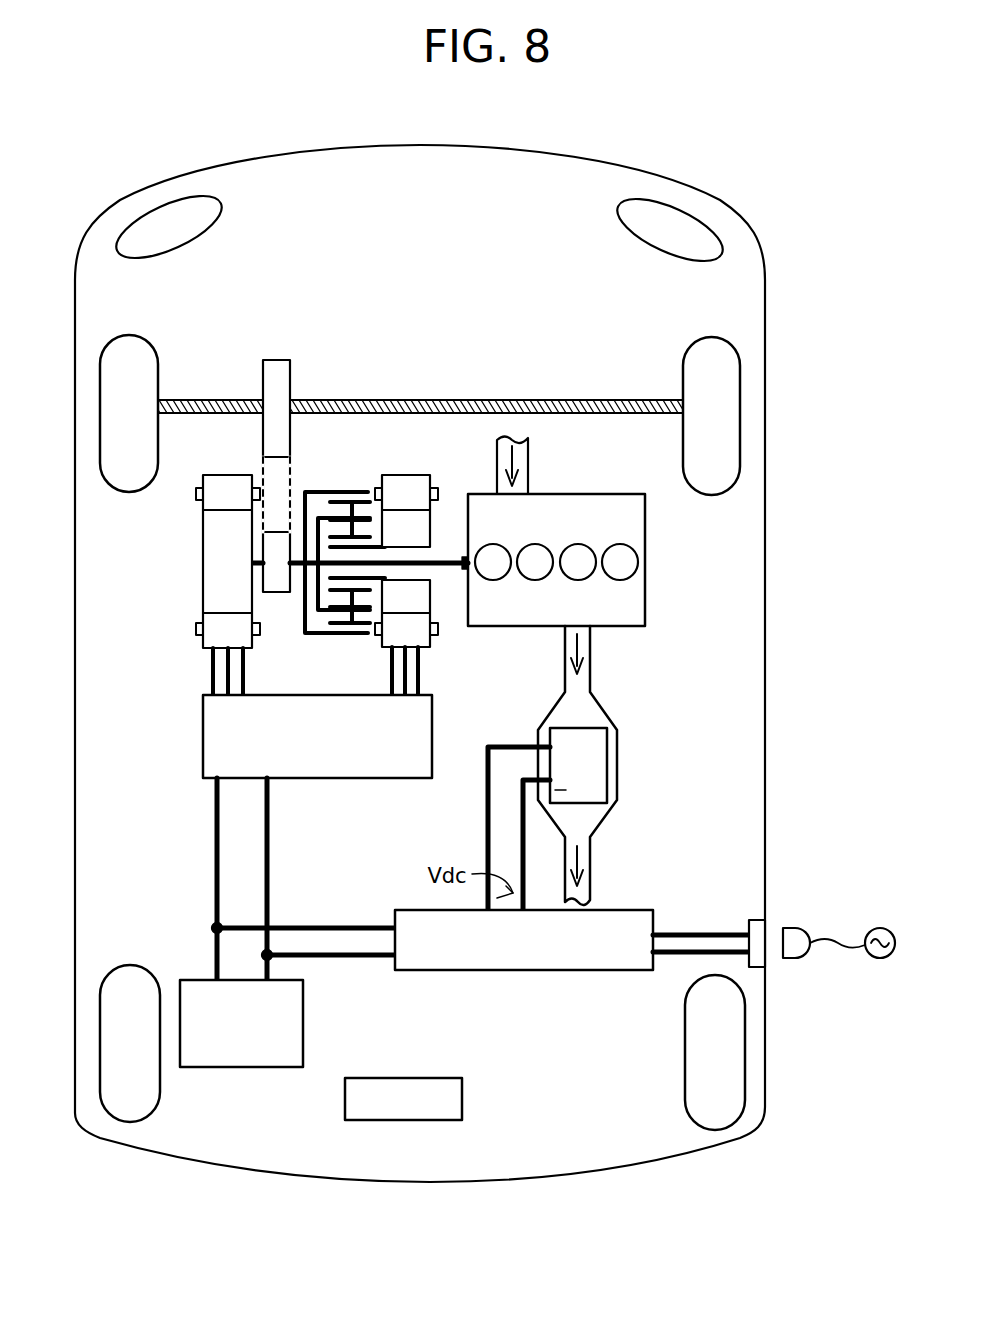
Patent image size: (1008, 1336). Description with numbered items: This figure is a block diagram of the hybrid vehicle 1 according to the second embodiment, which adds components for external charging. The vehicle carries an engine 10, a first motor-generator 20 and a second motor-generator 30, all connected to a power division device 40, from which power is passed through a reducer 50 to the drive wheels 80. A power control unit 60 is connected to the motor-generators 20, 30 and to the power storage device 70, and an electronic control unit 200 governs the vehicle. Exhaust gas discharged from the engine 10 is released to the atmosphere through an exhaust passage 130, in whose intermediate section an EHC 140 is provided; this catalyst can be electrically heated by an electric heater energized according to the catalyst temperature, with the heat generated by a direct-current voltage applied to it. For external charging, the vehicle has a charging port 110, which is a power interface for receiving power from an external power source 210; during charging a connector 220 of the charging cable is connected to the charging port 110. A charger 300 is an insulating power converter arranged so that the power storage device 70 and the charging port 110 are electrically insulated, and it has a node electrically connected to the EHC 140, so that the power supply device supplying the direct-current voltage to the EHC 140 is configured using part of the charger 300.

The hybrid vehicle 1 is at (408, 127).
The engine 10 is at (586, 494).
The first motor-generator 20 is at (405, 475).
The second motor-generator 30 is at (230, 475).
The power division device 40 is at (340, 492).
The reducer 50 is at (273, 360).
The power control unit 60 is at (203, 732).
The power storage device 70 is at (305, 1022).
The drive wheels 80 is at (128, 335).
The charging port 110 is at (756, 920).
The exhaust passage 130 is at (592, 652).
The EHC 140 is at (607, 766).
The electronic control unit 200 is at (402, 1120).
The external power source 210 is at (878, 958).
The connector 220 is at (795, 960).
The charger 300 is at (512, 970).